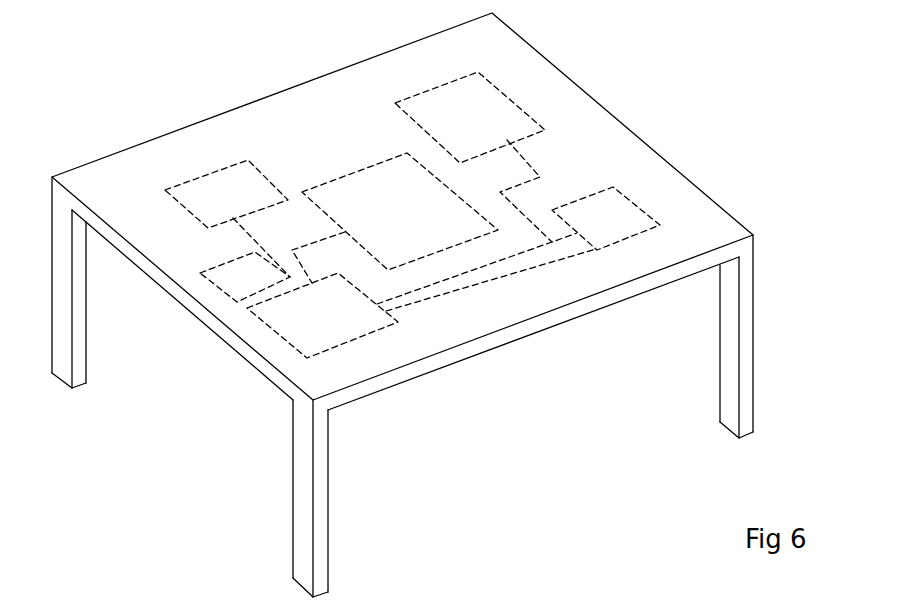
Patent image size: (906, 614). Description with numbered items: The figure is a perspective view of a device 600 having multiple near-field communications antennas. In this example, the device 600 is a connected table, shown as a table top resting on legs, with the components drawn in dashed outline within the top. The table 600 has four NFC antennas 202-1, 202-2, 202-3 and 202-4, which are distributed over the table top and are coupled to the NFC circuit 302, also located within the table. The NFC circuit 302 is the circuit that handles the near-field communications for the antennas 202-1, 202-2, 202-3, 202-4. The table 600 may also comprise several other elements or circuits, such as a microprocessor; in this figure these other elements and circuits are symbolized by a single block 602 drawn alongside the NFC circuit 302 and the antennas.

The device 600 is at (690, 96).
The NFC antenna 202-1 is at (183, 207).
The NFC antenna 202-2 is at (358, 172).
The NFC antenna 202-3 is at (522, 108).
The NFC antenna 202-4 is at (623, 242).
The NFC circuit 302 is at (270, 332).
The block 602 is at (222, 290).